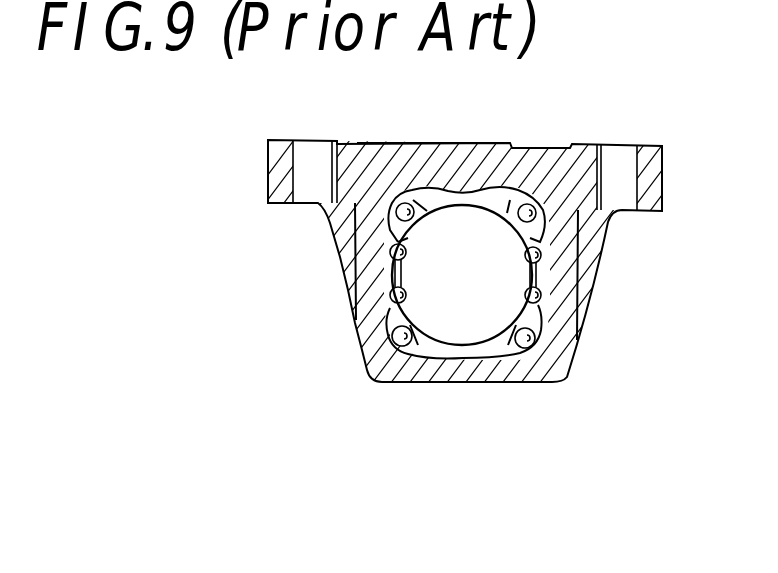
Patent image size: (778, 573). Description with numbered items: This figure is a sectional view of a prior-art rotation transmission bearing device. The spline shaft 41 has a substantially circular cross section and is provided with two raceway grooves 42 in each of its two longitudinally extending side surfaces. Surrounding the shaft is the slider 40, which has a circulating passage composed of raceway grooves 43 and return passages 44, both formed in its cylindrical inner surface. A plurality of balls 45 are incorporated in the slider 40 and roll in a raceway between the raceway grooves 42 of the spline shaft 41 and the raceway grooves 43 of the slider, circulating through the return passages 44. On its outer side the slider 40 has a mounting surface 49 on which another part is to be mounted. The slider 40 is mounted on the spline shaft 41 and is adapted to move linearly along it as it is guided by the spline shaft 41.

The slider 40 is at (573, 178).
The spline shaft 41 is at (462, 300).
The raceway grooves 42 is at (541, 257).
The raceway grooves 43 is at (392, 250).
The return passages 44 is at (519, 192).
The balls 45 is at (392, 283).
The mounting surface 49 is at (398, 142).